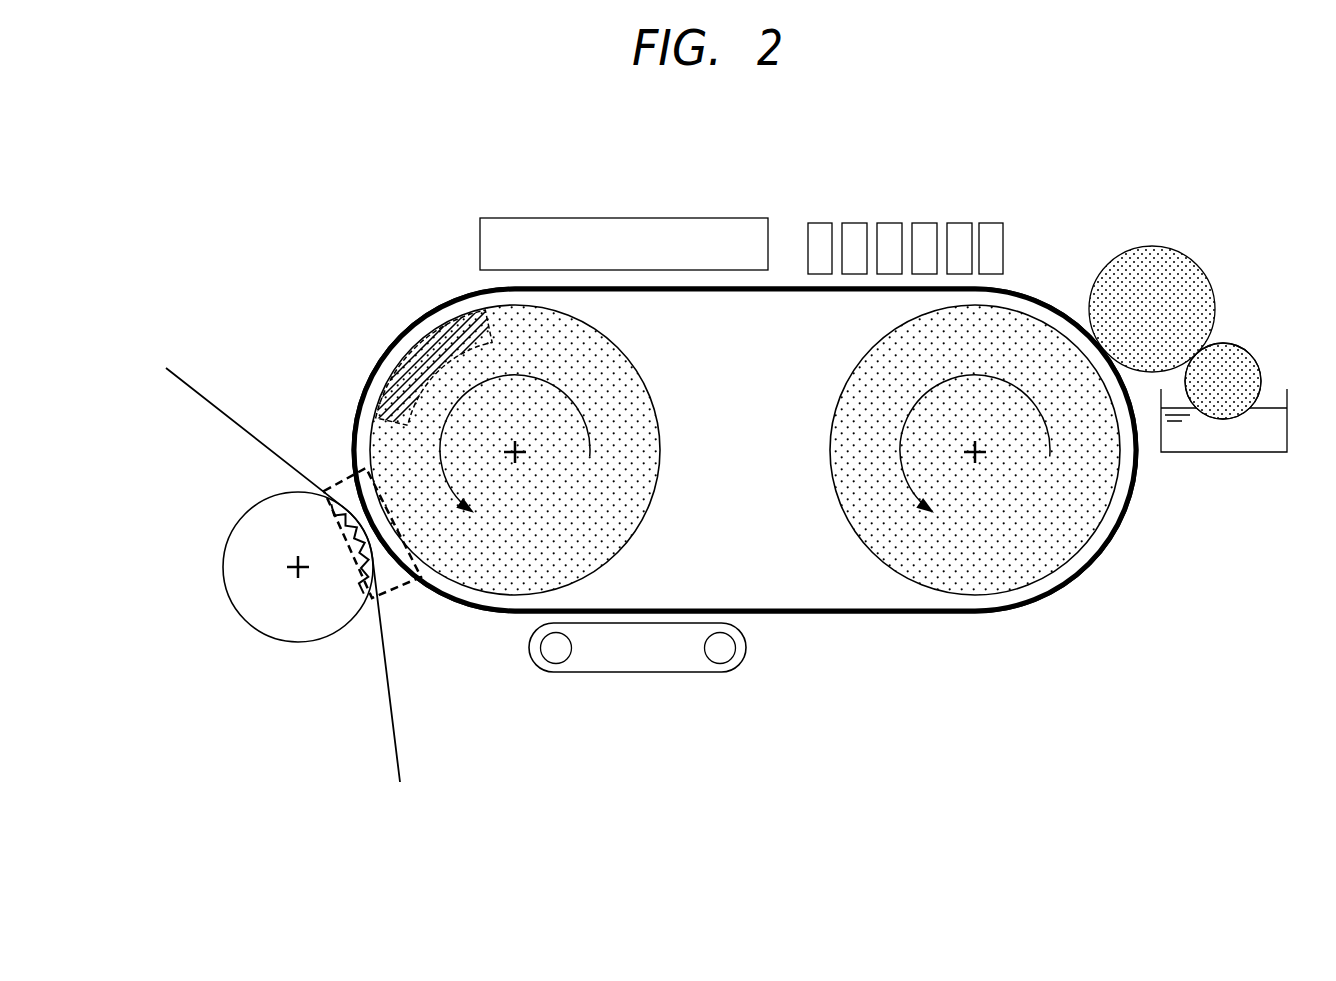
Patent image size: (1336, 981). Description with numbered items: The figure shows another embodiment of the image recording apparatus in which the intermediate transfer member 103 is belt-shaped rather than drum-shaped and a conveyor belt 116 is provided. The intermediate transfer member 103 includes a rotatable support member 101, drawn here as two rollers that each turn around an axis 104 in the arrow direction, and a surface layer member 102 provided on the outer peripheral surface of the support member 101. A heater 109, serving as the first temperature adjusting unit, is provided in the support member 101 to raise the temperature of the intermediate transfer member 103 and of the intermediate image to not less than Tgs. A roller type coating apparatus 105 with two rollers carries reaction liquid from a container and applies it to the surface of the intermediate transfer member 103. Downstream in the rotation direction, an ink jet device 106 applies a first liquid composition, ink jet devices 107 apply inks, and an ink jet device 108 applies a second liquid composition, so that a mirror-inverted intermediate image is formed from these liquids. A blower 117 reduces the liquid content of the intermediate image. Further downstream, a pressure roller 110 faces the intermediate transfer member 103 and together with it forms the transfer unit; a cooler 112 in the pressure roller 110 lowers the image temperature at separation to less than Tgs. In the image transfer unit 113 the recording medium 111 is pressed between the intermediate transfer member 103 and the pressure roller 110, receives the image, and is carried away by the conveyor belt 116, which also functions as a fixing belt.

The support member 101 is at (1075, 517).
The surface layer member 102 is at (1133, 478).
The intermediate transfer member 103 is at (418, 300).
The axis 104 is at (513, 470).
The roller type coating apparatus 105 is at (1170, 255).
The ink jet device 106 is at (992, 228).
The ink jet devices 107 is at (972, 212).
The ink jet device 108 is at (820, 228).
The heater 109 is at (397, 378).
The pressure roller 110 is at (245, 603).
The recording medium 111 is at (205, 398).
The cooler 112 is at (362, 582).
The image transfer unit 113 is at (335, 478).
The conveyor belt 116 is at (637, 673).
The blower 117 is at (627, 225).